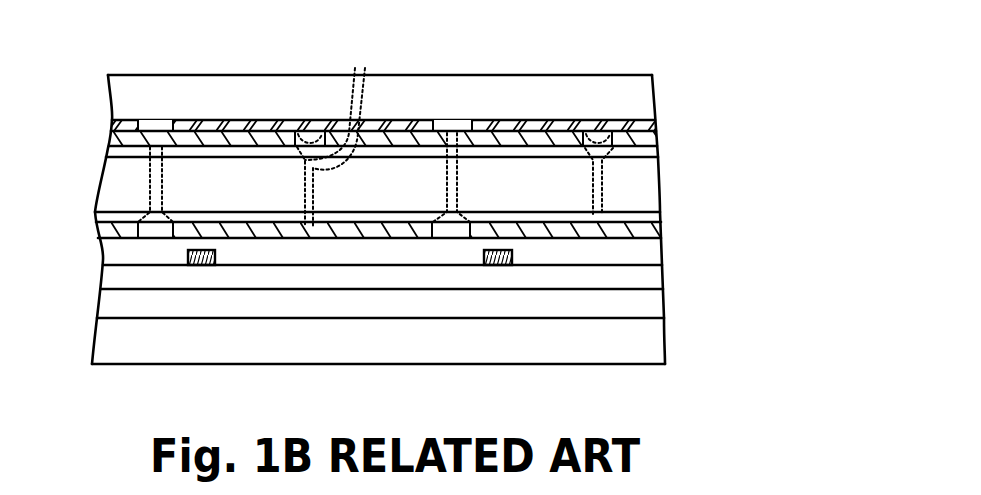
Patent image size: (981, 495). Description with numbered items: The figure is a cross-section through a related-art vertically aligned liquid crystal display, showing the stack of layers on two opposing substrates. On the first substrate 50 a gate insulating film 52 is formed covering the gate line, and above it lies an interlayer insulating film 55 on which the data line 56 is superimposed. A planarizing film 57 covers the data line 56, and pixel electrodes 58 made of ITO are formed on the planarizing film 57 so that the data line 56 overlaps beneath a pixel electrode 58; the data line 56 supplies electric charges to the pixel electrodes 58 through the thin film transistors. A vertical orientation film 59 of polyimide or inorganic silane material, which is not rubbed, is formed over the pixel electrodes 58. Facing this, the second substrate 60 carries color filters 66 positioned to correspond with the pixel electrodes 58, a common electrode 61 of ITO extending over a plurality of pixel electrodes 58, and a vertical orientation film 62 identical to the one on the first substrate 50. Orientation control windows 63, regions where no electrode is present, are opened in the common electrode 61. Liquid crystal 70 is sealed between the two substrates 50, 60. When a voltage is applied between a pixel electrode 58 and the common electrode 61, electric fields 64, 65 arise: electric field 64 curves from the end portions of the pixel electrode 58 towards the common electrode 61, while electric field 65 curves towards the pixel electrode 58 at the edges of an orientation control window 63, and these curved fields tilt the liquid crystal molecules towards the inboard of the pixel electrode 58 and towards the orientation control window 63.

The first substrate 50 is at (652, 343).
The gate insulating film 52 is at (650, 306).
The interlayer insulating film 55 is at (648, 273).
The data line 56 is at (200, 266).
The planarizing film 57 is at (645, 251).
The pixel electrode 58 is at (655, 233).
The vertical orientation film 59 is at (660, 216).
The second substrate 60 is at (640, 100).
The common electrode 61 is at (492, 140).
The vertical orientation film 62 is at (655, 157).
The orientation control window 63 is at (310, 142).
The electric field 64 is at (165, 180).
The electric field 65 is at (340, 106).
The color filter 66 is at (263, 123).
The liquid crystal 70 is at (643, 189).